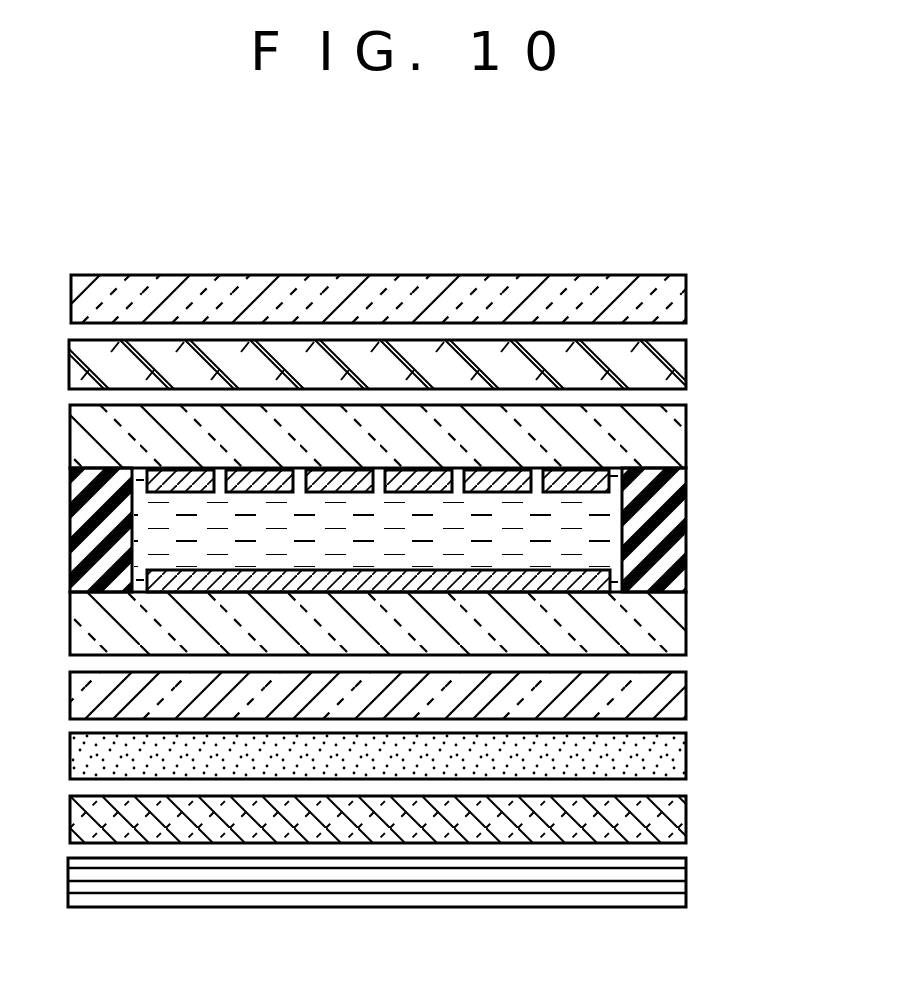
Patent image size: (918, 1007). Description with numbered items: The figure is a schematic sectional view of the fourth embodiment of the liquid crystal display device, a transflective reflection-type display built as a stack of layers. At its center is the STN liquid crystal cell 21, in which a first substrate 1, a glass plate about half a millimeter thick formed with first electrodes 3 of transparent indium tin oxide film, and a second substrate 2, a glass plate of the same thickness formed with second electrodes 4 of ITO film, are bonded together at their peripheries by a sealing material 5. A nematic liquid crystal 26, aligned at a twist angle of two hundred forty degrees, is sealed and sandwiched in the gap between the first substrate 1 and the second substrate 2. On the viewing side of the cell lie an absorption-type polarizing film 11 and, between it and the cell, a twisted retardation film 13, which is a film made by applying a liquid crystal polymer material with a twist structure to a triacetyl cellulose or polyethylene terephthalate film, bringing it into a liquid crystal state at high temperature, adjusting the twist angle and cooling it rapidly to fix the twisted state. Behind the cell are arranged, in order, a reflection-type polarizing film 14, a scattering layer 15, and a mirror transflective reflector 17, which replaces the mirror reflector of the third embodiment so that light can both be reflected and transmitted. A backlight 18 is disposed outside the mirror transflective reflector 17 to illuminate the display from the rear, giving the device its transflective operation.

The first substrate 1 is at (483, 613).
The second substrate 2 is at (336, 417).
The first electrodes 3 is at (562, 572).
The second electrodes 4 is at (405, 470).
The sealing material 5 is at (124, 492).
The absorption-type polarizing film 11 is at (687, 285).
The twisted retardation film 13 is at (687, 357).
The reflection-type polarizing film 14 is at (687, 693).
The scattering layer 15 is at (687, 750).
The mirror transflective reflector 17 is at (687, 812).
The backlight 18 is at (687, 872).
The STN liquid crystal cell 21 is at (417, 423).
The nematic liquid crystal 26 is at (247, 527).